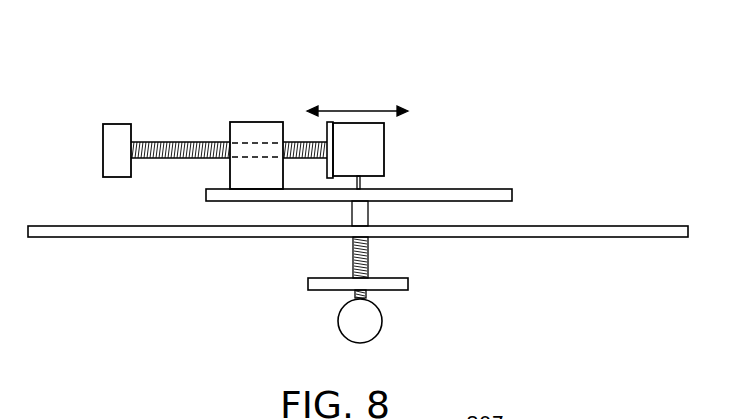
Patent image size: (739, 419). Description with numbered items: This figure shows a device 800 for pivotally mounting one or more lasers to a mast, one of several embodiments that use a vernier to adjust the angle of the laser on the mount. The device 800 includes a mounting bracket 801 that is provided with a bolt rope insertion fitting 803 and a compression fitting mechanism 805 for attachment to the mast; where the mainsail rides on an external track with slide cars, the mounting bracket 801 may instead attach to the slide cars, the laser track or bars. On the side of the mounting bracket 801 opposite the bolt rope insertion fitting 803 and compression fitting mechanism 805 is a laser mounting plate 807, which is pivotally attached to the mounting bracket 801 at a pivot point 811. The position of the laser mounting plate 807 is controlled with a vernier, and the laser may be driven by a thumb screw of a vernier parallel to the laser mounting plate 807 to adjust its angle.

The device 800 is at (563, 82).
The mounting bracket 801 is at (89, 231).
The bolt rope insertion fitting 803 is at (368, 322).
The compression fitting mechanism 805 is at (397, 283).
The laser mounting plate 807 is at (502, 197).
The pivot point 811 is at (360, 215).